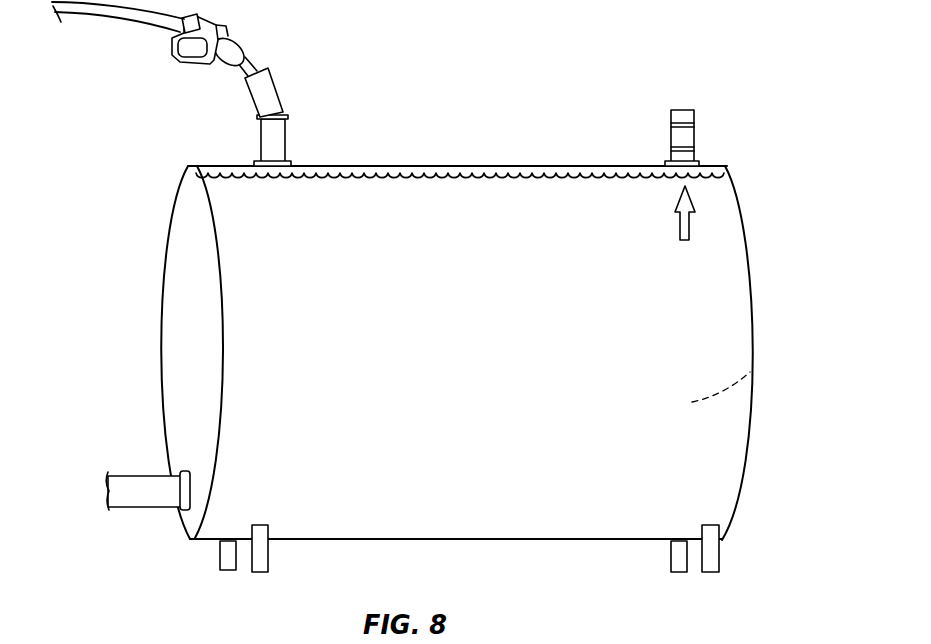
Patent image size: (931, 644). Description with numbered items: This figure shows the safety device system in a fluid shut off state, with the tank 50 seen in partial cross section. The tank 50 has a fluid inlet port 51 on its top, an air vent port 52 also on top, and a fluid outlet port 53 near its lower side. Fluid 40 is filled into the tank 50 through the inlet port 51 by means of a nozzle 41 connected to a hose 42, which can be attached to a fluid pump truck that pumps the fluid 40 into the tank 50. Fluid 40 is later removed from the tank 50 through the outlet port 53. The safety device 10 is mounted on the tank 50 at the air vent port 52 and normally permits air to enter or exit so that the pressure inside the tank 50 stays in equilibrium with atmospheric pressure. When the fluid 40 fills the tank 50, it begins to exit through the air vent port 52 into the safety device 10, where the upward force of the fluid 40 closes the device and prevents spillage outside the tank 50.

The safety device 10 is at (697, 133).
The fluid 40 is at (750, 372).
The nozzle 41 is at (225, 54).
The hose 42 is at (104, 10).
The tank 50 is at (758, 292).
The fluid inlet port 51 is at (290, 160).
The air vent port 52 is at (700, 162).
The fluid outlet port 53 is at (192, 480).